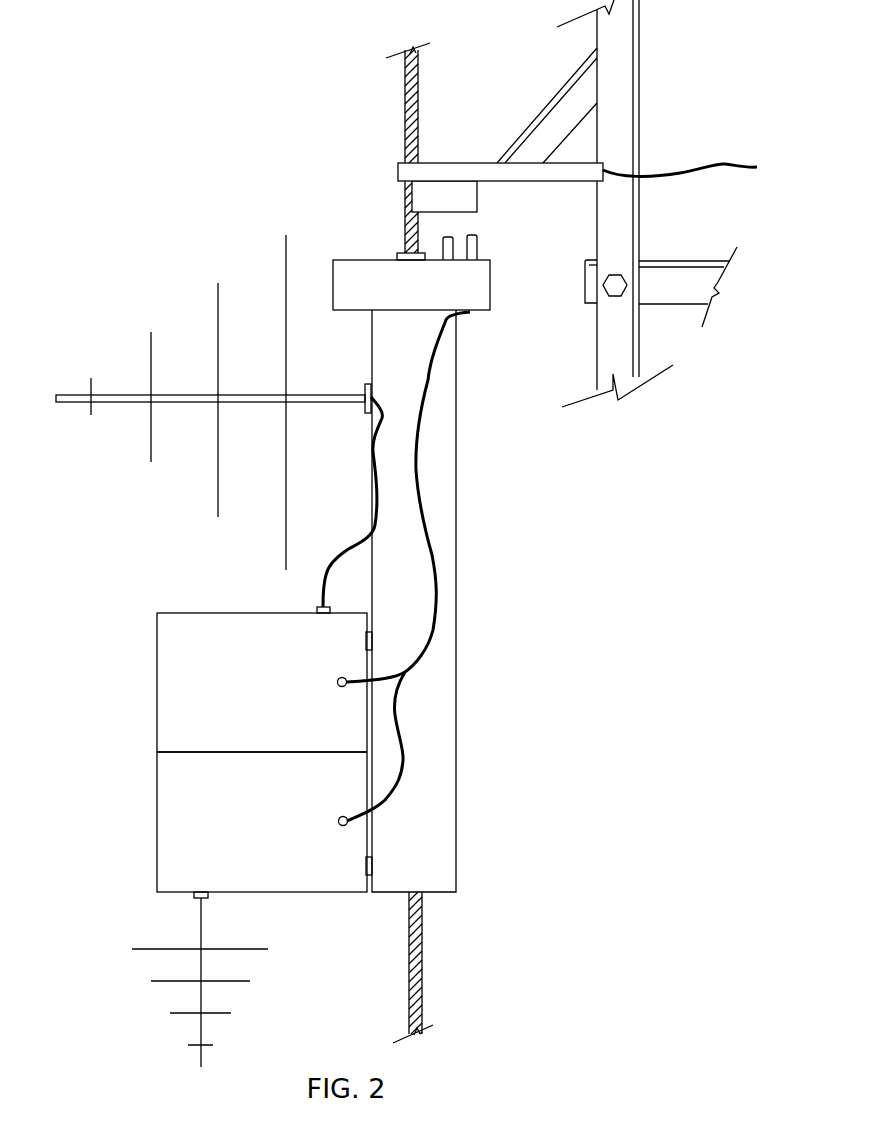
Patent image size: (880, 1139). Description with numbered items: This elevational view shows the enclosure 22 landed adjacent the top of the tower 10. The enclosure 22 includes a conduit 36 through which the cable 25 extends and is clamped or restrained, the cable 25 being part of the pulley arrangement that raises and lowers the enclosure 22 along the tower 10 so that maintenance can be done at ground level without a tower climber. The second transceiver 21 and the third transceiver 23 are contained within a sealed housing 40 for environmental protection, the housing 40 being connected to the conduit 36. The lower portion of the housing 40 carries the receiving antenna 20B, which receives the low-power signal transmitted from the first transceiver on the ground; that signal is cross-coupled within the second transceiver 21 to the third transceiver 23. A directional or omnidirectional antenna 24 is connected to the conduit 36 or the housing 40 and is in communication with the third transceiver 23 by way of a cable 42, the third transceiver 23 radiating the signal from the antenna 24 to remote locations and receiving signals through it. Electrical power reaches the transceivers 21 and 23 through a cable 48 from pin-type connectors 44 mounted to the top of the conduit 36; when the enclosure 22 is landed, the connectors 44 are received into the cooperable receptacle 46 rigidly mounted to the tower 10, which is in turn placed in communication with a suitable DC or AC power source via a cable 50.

The tower 10 is at (640, 33).
The cooperable receptacle 46 is at (467, 163).
The cable 50 is at (703, 165).
The pin-type connectors 44 is at (471, 232).
The conduit 36 is at (450, 785).
The cable 25 is at (421, 980).
The antenna 24 is at (120, 395).
The cable 42 is at (337, 557).
The cable 48 is at (430, 538).
The sealed housing 40 is at (157, 647).
The third transceiver 23 is at (270, 744).
The second transceiver 21 is at (270, 885).
The enclosure 22 is at (135, 799).
The antenna 20B is at (170, 1003).